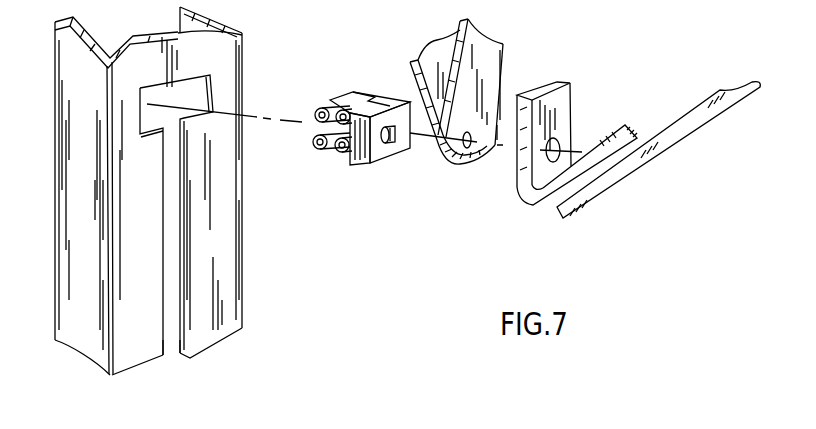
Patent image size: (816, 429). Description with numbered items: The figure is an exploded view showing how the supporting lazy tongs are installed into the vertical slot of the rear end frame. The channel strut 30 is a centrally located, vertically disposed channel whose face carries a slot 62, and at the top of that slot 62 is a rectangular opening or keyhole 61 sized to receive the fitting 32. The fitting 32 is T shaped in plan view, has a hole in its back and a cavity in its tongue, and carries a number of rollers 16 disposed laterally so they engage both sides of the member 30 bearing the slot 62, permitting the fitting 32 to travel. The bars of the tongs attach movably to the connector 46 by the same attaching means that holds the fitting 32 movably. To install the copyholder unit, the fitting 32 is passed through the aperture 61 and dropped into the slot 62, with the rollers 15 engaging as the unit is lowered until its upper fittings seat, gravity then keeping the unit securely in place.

The rollers 15 is at (483, 41).
The rollers 16 is at (322, 154).
The channel strut 30 is at (220, 232).
The fitting 32 is at (377, 162).
The connector 46 is at (560, 118).
The rectangular opening or keyhole 61 is at (192, 96).
The slot 62 is at (172, 332).